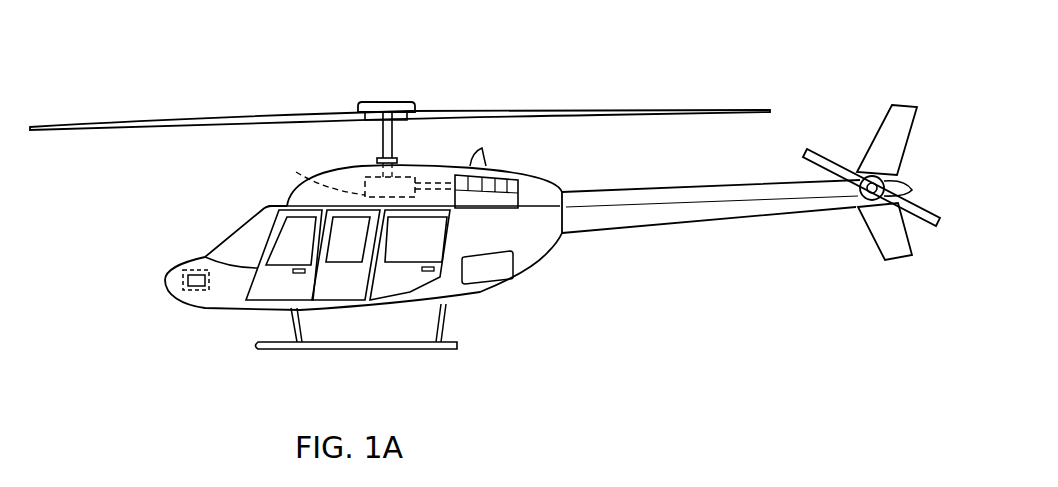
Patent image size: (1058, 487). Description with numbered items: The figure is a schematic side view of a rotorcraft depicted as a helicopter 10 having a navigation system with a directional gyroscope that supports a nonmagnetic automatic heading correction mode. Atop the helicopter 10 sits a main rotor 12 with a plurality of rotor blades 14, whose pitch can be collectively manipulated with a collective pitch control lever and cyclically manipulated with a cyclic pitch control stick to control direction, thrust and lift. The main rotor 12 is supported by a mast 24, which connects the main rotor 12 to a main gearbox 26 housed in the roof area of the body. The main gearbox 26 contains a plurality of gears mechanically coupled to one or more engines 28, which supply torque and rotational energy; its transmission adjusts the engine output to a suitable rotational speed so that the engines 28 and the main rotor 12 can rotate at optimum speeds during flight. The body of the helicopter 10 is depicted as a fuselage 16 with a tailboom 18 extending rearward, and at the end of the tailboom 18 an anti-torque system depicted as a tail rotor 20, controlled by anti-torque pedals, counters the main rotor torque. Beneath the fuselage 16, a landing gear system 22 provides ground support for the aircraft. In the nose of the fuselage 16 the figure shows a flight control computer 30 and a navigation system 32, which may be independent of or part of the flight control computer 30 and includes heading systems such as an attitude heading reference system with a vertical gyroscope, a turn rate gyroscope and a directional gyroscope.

The helicopter 10 is at (276, 70).
The main rotor 12 is at (456, 94).
The rotor blades 14 is at (578, 109).
The fuselage 16 is at (532, 260).
The tailboom 18 is at (685, 215).
The tail rotor 20 is at (916, 200).
The landing gear system 22 is at (362, 350).
The mast 24 is at (383, 140).
The main gearbox 26 is at (296, 172).
The engines 28 is at (498, 186).
The flight control computer 30 is at (195, 292).
The navigation system 32 is at (178, 273).